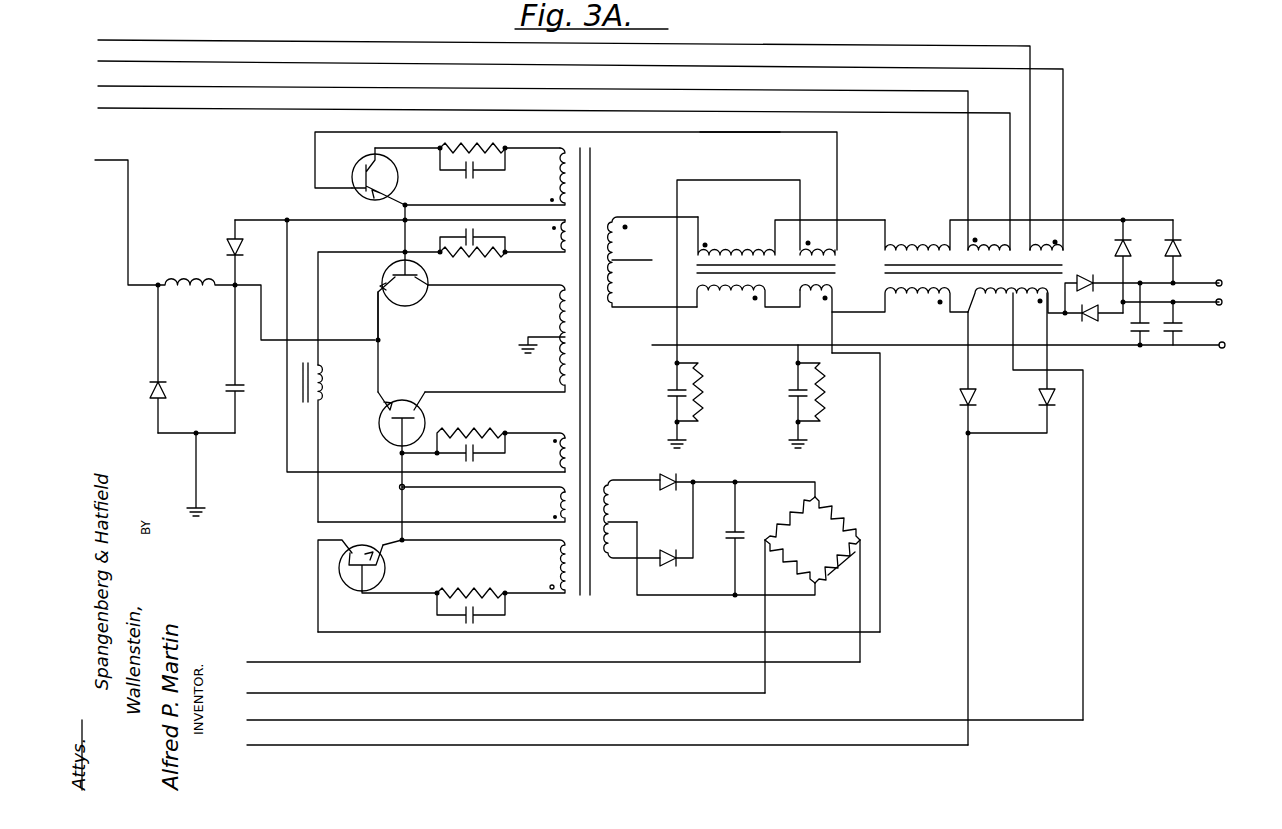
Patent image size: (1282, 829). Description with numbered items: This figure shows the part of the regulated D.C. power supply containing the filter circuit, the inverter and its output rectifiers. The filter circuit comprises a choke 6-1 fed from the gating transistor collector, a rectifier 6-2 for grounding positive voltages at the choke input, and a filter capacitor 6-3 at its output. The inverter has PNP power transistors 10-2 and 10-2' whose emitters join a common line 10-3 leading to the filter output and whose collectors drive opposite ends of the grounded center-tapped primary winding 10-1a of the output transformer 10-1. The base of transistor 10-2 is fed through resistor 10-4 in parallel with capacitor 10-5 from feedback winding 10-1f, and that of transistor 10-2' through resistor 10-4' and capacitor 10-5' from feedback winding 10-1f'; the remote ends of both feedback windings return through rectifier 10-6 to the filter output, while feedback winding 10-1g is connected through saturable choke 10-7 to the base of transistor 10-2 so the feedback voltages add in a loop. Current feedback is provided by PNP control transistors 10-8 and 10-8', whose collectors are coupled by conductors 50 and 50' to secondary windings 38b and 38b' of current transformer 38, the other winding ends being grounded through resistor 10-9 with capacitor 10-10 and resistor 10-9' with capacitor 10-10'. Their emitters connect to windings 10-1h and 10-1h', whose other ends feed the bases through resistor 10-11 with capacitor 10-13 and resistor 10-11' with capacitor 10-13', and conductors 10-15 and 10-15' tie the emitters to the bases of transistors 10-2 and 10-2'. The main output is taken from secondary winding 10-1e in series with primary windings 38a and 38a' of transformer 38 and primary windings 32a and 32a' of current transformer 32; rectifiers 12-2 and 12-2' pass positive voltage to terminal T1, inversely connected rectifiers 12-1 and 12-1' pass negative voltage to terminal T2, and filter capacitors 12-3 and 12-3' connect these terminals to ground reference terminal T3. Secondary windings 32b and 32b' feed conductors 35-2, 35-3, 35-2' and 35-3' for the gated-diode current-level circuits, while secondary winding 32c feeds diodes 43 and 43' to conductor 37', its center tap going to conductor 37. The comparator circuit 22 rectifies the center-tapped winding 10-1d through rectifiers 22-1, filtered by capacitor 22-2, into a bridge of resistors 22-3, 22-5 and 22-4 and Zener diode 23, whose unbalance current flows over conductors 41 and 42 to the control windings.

The conductor 35-2 is at (564, 130).
The conductor 35-3 is at (580, 130).
The conductor 35-2' is at (533, 130).
The conductor 35-3' is at (554, 130).
The choke 6-1 is at (190, 280).
The rectifier 6-2 is at (152, 380).
The filter capacitor 6-3 is at (215, 388).
The rectifier 10-6 is at (232, 240).
The conductor 10-15 is at (400, 210).
The conductor 10-15' is at (483, 502).
The PNP control transistor 10-8 is at (365, 172).
The PNP control transistor 10-8' is at (391, 568).
The resistor 10-11 is at (467, 134).
The resistor 10-11' is at (432, 583).
The capacitor 10-13 is at (459, 173).
The capacitor 10-13' is at (497, 611).
The inverter output transformer 10-1 is at (597, 152).
The transformer winding 10-1h is at (534, 176).
The transformer winding 10-1h' is at (474, 566).
The feedback winding 10-1f is at (535, 236).
The feedback winding 10-1f' is at (599, 442).
The primary winding 10-1a is at (552, 310).
The secondary winding 10-1e is at (630, 210).
The feedback winding 10-1g is at (572, 498).
The center tapped secondary winding 10-1d is at (620, 500).
The resistor 10-4 is at (455, 265).
The resistor 10-4' is at (483, 426).
The capacitor 10-5 is at (457, 236).
The capacitor 10-5' is at (490, 451).
The PNP power transistor 10-2 is at (412, 296).
The PNP power transistor 10-2' is at (404, 407).
The common line 10-3 is at (380, 336).
The saturable choke 10-7 is at (332, 442).
The resistor 10-9 is at (715, 392).
The resistor 10-9' is at (833, 402).
The capacitor 10-10 is at (648, 405).
The capacitor 10-10' is at (770, 396).
The conductor 50 is at (740, 145).
The conductor 50' is at (599, 644).
The current transformer 38 is at (852, 273).
The primary winding 38a is at (791, 230).
The primary winding 38a' is at (744, 311).
The secondary winding 38b is at (817, 208).
The secondary winding 38b' is at (788, 319).
The current transformer 32 is at (875, 270).
The primary winding 32a is at (1029, 228).
The primary winding 32a' is at (900, 313).
The secondary winding 32b is at (1069, 212).
The secondary winding 32b' is at (989, 216).
The secondary winding 32c is at (996, 315).
The rectifier 12-1 is at (1143, 253).
The rectifier 12-1' is at (1092, 336).
The rectifier 12-2 is at (1203, 248).
The rectifier 12-2' is at (1142, 284).
The filter capacitor 12-3 is at (1137, 345).
The filter capacitor 12-3' is at (1192, 347).
The positive output terminal T1 is at (1219, 279).
The negative output terminal T2 is at (1220, 306).
The ground reference terminal T3 is at (1226, 347).
The diode 43 is at (948, 528).
The diode 43' is at (1016, 381).
The conductor 37 is at (665, 700).
The conductor 37' is at (607, 759).
The conductor 41 is at (645, 662).
The conductor 42 is at (740, 695).
The comparator circuit 22 is at (683, 611).
The rectifier 22-1 is at (678, 478).
The filter capacitor 22-2 is at (742, 530).
The resistor 22-3 is at (795, 518).
The resistor 22-4 is at (790, 565).
The resistor 22-5 is at (838, 512).
The Zener diode 23 is at (838, 572).